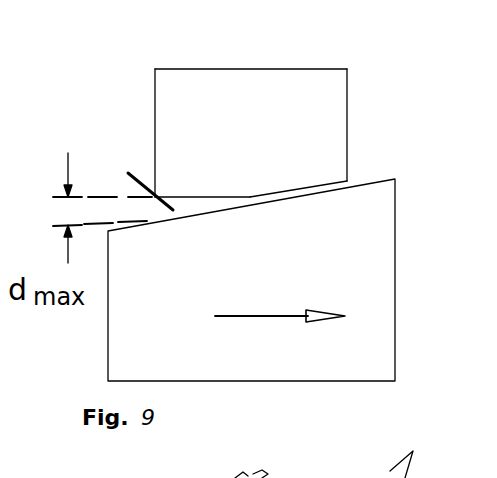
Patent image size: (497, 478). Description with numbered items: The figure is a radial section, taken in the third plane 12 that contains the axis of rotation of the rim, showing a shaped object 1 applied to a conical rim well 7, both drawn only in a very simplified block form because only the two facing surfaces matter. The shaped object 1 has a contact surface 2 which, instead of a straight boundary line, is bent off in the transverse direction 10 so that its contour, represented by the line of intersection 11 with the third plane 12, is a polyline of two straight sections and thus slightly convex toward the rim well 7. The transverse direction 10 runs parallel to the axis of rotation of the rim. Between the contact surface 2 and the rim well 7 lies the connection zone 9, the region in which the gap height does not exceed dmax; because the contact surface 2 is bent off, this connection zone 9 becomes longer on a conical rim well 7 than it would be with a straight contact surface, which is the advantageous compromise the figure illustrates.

The shaped object 1 is at (330, 127).
The contact surface 2 is at (179, 195).
The rim well 7 is at (388, 202).
The connection zone 9 is at (133, 181).
The transverse direction 10 is at (302, 319).
The line of intersection 11 is at (275, 193).
The third plane 12 is at (305, 60).